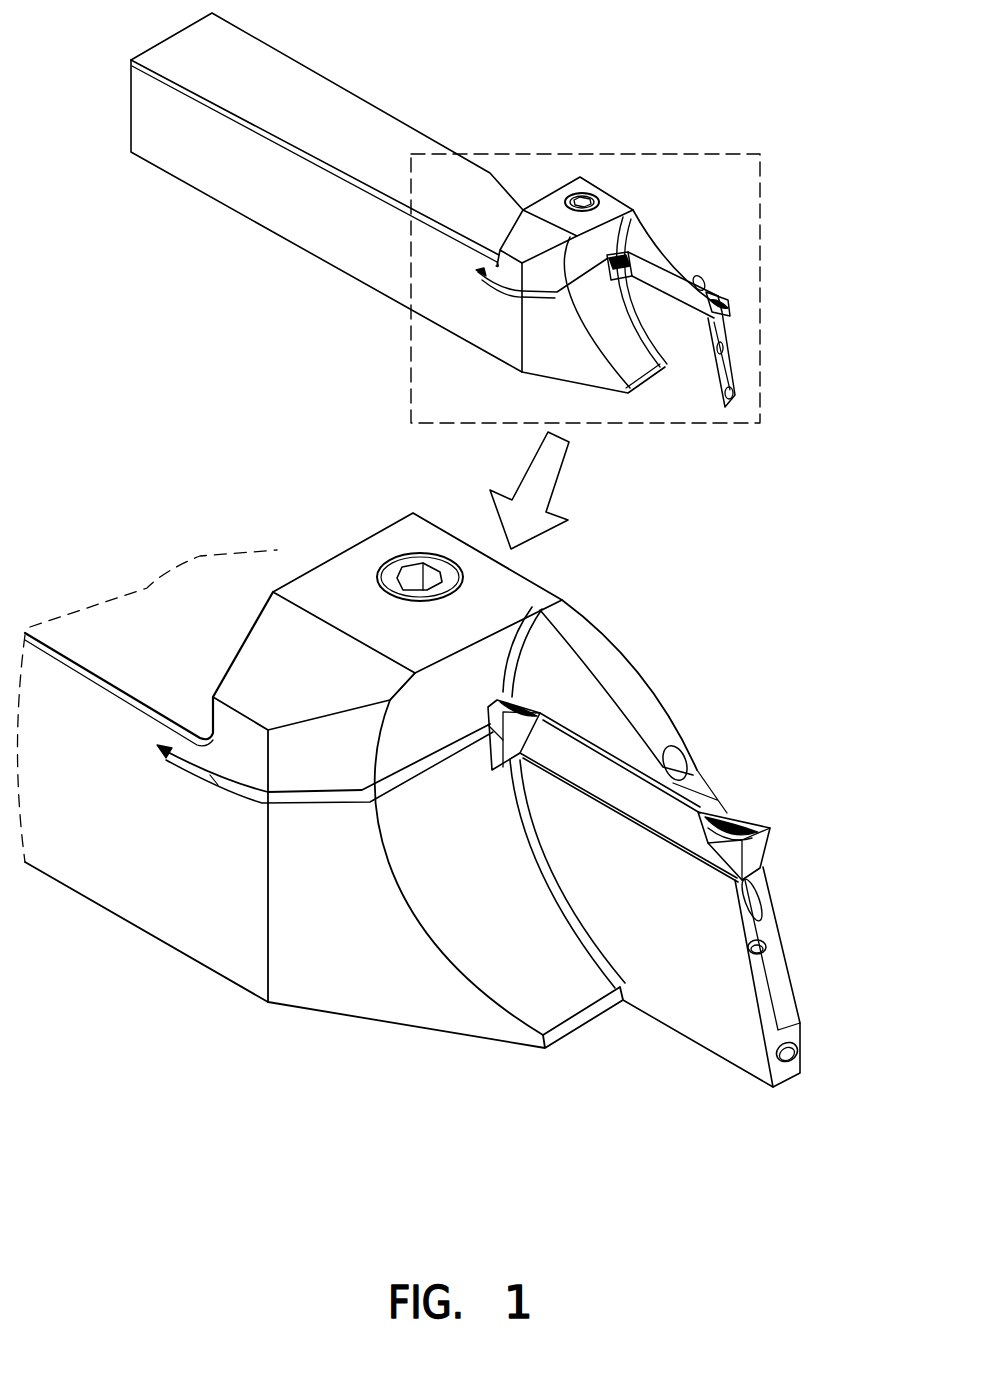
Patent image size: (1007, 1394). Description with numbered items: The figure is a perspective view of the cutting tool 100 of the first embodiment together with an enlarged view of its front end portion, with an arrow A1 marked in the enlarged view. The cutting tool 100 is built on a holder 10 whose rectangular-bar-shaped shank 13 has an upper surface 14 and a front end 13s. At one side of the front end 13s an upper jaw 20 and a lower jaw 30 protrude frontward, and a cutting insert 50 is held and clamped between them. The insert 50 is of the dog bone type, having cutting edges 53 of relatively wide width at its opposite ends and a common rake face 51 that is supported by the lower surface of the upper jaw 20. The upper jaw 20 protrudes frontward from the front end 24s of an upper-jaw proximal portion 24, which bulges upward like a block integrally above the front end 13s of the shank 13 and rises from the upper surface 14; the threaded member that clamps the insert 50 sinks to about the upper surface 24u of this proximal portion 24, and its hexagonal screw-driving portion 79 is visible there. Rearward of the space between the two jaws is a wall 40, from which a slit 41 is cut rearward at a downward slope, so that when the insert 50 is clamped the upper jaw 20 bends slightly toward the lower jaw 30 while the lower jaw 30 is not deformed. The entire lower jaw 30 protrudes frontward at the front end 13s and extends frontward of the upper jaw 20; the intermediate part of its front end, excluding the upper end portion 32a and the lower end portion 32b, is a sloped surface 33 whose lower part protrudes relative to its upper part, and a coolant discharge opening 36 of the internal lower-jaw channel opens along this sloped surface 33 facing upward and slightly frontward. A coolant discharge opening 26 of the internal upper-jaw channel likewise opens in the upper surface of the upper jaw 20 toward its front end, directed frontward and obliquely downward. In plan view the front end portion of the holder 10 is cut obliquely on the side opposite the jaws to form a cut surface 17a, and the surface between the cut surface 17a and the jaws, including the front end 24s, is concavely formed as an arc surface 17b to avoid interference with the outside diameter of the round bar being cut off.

The cutting tool 100 is at (545, 122).
The holder 10 is at (403, 118).
The shank 13 is at (245, 197).
The front end of shank 13s is at (582, 380).
The upper surface of holder 14 is at (310, 85).
The cut surface 17a is at (330, 975).
The arc surface 17b is at (437, 878).
The upper jaw 20 is at (670, 245).
The upper-jaw proximal portion 24 is at (617, 205).
The upper surface of upper-jaw proximal portion 24u is at (432, 540).
The front end of upper-jaw proximal portion 24s is at (493, 655).
The coolant discharge opening 26 is at (677, 762).
The lower jaw 30 is at (700, 385).
The upper end portion 32a is at (760, 885).
The lower end portion 32b is at (787, 1077).
The sloped surface 33 is at (772, 983).
The coolant discharge opening 36 is at (757, 944).
The wall 40 is at (538, 770).
The slit 41 is at (545, 293).
The cutting insert 50 is at (730, 300).
The rake face 51 is at (725, 808).
The cutting edge 53 is at (770, 838).
The screw-driving portion 79 is at (405, 575).
The view direction A1 is at (757, 722).